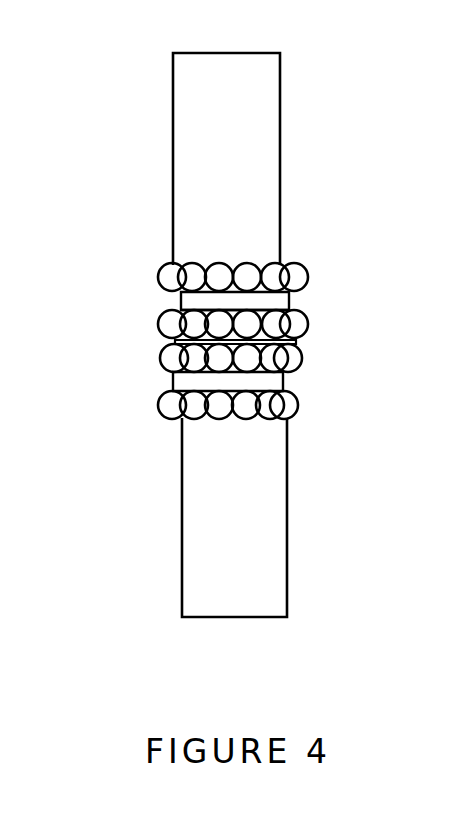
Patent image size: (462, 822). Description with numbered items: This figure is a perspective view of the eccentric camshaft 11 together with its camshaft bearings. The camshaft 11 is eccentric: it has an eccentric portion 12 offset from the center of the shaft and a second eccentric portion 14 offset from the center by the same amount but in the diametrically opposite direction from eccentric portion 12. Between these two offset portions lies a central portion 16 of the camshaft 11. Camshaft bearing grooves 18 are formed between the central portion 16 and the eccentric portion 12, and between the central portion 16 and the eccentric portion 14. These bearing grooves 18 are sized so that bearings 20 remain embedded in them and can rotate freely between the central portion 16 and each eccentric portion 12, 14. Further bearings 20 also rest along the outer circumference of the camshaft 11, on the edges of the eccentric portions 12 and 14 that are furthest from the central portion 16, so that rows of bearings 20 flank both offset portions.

The eccentric camshaft 11 is at (263, 134).
The eccentric portion 12 is at (290, 291).
The eccentric portion 14 is at (280, 383).
The central portion 16 is at (294, 342).
The camshaft bearing grooves 18 is at (168, 315).
The bearings 20 is at (165, 281).